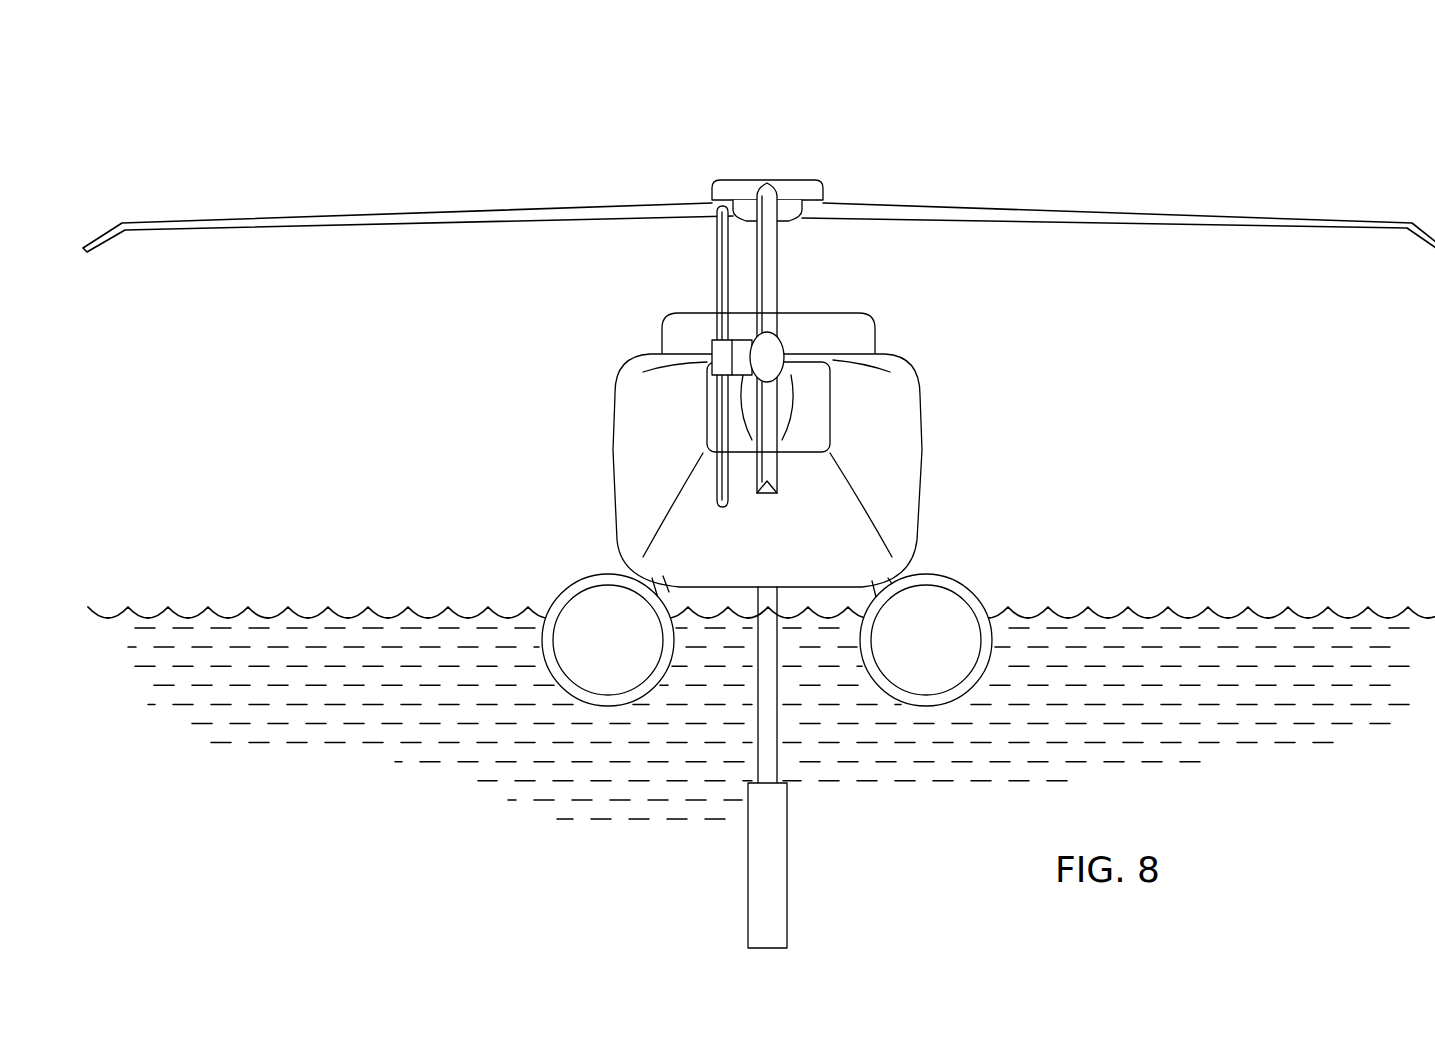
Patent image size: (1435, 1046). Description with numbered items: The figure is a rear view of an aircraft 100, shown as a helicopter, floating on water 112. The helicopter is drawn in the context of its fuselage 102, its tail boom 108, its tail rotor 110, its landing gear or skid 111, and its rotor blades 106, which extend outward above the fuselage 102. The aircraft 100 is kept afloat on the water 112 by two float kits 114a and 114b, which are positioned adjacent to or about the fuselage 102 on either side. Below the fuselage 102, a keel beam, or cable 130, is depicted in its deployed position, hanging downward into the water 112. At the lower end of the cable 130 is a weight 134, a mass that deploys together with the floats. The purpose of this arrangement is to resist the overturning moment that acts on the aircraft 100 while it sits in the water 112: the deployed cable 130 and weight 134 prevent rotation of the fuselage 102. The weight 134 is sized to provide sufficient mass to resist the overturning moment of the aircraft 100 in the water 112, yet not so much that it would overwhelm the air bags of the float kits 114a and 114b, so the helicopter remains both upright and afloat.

The aircraft 100 is at (759, 501).
The fuselage 102 is at (907, 368).
The blades 106 is at (972, 205).
The tail boom 108 is at (820, 423).
The tail rotor 110 is at (712, 266).
The landing gear or skid 111 is at (648, 577).
The water 112 is at (187, 615).
The float kit 114a is at (585, 580).
The float kit 114b is at (953, 577).
The keel beam or cable 130 is at (777, 713).
The weight 134 is at (787, 872).